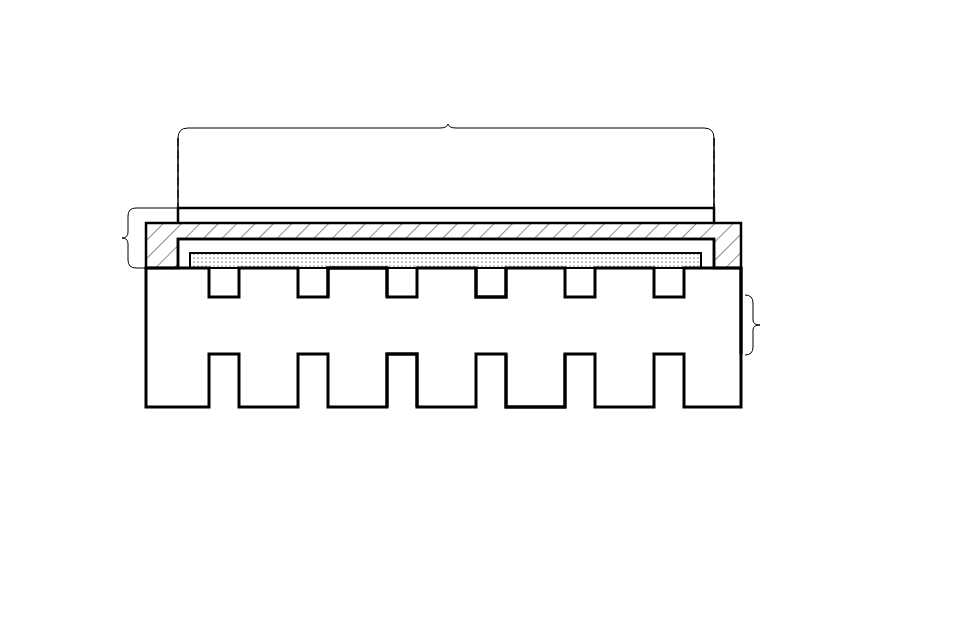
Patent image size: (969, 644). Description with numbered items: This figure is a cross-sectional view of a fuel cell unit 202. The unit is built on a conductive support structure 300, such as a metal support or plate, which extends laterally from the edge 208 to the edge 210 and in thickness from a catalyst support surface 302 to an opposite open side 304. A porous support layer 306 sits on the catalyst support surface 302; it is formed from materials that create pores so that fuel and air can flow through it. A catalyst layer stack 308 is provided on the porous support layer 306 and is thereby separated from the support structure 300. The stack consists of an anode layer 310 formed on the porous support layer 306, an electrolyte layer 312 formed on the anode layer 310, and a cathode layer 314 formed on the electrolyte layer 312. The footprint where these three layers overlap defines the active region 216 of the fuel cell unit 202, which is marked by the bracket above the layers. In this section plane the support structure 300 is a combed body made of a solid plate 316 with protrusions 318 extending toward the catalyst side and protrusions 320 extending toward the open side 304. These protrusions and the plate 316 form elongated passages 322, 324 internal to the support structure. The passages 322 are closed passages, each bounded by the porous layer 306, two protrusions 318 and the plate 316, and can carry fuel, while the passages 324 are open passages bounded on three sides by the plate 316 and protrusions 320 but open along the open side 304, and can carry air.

The fuel cell unit 202 is at (146, 68).
The edge 208 is at (138, 318).
The edge 210 is at (750, 279).
The active region 216 is at (447, 128).
The conductive support structure 300 is at (146, 355).
The catalyst support surface 302 is at (257, 256).
The open side 304 is at (337, 414).
The porous support layer 306 is at (331, 262).
The catalyst layer stack 308 is at (122, 238).
The anode layer 310 is at (406, 247).
The electrolyte layer 312 is at (471, 233).
The cathode layer 314 is at (616, 216).
The solid plate 316 is at (765, 325).
The protrusions 318 is at (354, 283).
The protrusions 320 is at (542, 372).
The passages 322 is at (496, 283).
The passages 324 is at (405, 386).